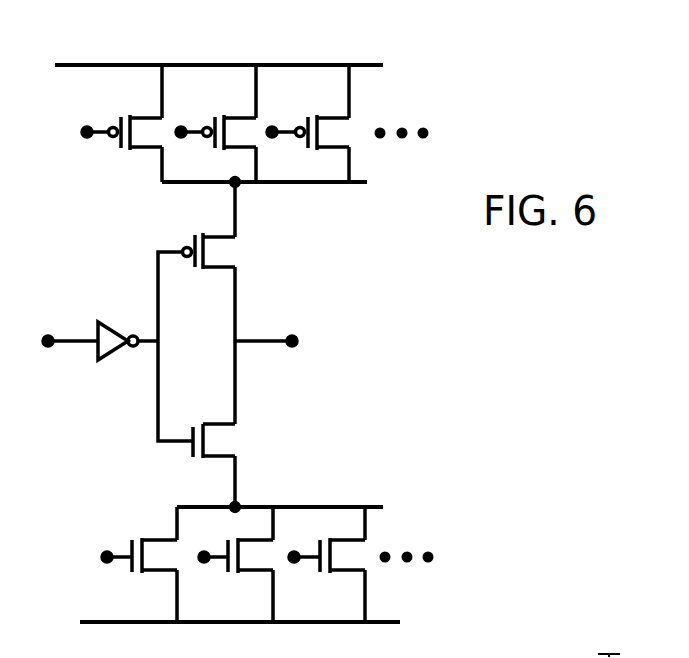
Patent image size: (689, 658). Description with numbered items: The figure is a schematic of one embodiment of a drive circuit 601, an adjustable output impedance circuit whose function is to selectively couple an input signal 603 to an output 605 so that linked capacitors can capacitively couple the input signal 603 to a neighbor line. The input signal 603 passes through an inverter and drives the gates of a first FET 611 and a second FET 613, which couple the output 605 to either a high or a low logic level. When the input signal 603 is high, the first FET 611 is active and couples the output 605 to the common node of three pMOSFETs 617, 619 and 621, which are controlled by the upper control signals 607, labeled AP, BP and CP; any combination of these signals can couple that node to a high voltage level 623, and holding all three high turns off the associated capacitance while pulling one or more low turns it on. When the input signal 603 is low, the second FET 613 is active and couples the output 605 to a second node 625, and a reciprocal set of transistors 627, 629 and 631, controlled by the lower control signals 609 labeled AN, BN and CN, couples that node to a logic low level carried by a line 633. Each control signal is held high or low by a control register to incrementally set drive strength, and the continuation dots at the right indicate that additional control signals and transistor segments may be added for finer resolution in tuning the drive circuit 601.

The drive circuit 601 is at (390, 287).
The input signal 603 is at (82, 337).
The output 605 is at (295, 337).
The control signals AP, BP, CP 607 is at (109, 151).
The control signals AN, BN, CN 609 is at (107, 533).
The first FET 611 is at (237, 235).
The second FET 613 is at (232, 187).
The pMOSFET 617 is at (130, 150).
The pMOSFET 619 is at (258, 152).
The pMOSFET 621 is at (350, 118).
The high voltage level 623 is at (380, 67).
The second node 625 is at (240, 502).
The transistor of reciprocal pair 627 is at (145, 537).
The transistor of reciprocal pair 629 is at (275, 537).
The transistor of reciprocal pair 631 is at (368, 537).
The line carrying logic low level 633 is at (260, 623).